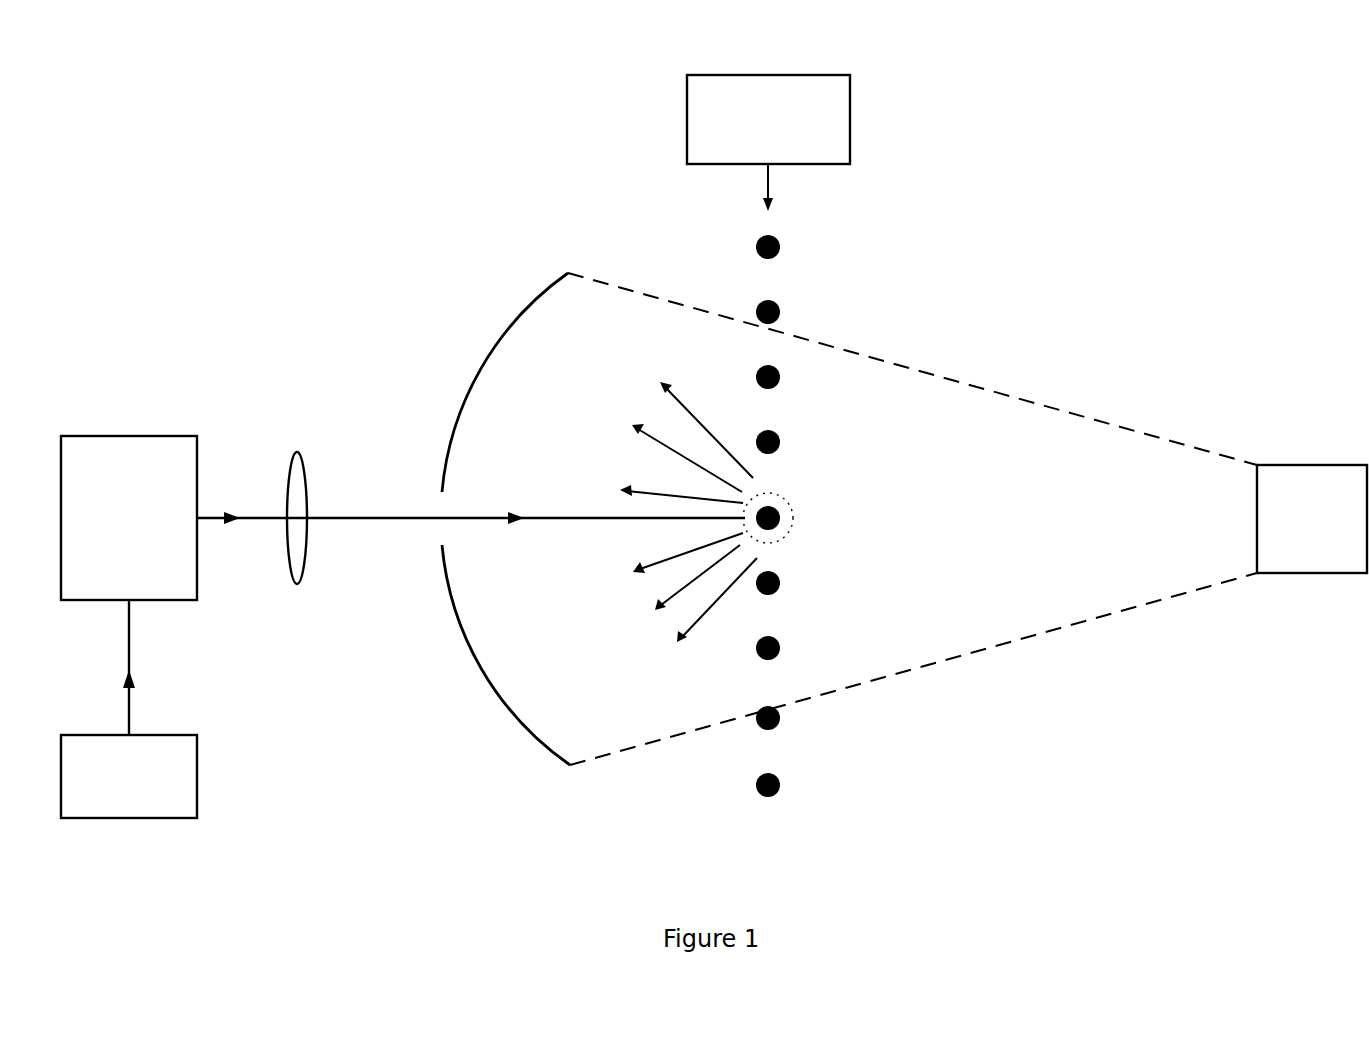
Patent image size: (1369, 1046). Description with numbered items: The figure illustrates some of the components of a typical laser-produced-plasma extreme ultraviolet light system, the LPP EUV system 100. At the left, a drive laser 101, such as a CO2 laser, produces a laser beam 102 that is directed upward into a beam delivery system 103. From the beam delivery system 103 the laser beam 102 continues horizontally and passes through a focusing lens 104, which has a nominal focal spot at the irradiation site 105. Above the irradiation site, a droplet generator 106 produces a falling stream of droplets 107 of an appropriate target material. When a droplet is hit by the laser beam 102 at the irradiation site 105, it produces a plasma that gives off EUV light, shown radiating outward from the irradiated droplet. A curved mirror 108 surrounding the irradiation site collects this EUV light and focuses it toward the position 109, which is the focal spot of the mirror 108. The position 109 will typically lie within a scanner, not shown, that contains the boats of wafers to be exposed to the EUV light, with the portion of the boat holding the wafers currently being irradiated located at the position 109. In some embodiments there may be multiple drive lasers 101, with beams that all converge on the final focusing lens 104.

The LPP EUV system 100 is at (714, 446).
The drive laser 101 is at (129, 776).
The laser beam 102 is at (248, 517).
The beam delivery system 103 is at (129, 518).
The focusing lens 104 is at (297, 586).
The irradiation site 105 is at (797, 517).
The droplet generator 106 is at (768, 143).
The droplets 107 is at (808, 231).
The mirror 108 is at (500, 325).
The position 109 is at (1105, 737).